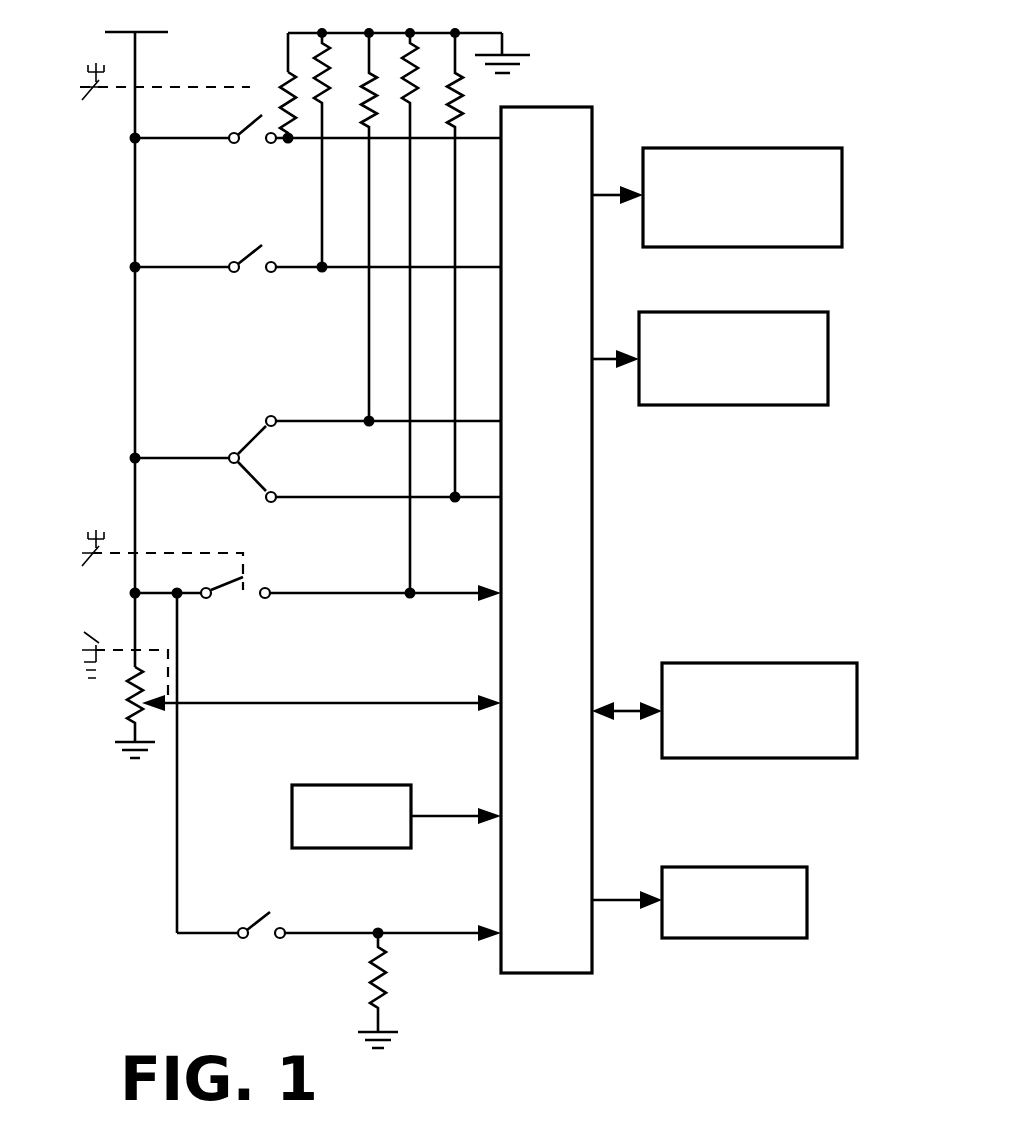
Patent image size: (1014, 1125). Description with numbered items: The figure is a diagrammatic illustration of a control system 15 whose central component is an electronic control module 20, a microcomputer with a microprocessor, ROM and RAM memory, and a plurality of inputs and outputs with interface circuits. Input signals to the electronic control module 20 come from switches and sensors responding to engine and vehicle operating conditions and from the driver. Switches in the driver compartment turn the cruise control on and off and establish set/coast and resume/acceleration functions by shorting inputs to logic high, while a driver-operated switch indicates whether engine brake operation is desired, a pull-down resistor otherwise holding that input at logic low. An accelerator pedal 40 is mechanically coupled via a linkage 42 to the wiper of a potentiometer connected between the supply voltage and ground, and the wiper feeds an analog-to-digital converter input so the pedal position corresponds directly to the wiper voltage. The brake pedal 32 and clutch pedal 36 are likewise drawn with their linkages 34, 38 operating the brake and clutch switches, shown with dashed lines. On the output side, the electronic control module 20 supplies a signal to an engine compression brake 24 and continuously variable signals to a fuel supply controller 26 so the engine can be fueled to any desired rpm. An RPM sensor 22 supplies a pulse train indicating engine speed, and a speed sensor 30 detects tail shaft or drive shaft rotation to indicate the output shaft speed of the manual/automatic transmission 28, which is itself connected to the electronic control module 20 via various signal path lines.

The control system 15 is at (605, 973).
The electronic control module 20 is at (592, 125).
The RPM sensor 22 is at (383, 785).
The engine compression brake 24 is at (842, 200).
The fuel supply controller 26 is at (828, 358).
The manual/automatic transmission 28 is at (857, 708).
The speed sensor 30 is at (807, 903).
The brake pedal 32 is at (82, 90).
The brake pedal linkage to switch SW3 34 is at (196, 86).
The clutch pedal 36 is at (100, 568).
The clutch pedal linkage to switch SW4 38 is at (185, 550).
The accelerator pedal 40 is at (82, 646).
The linkage 42 is at (170, 668).